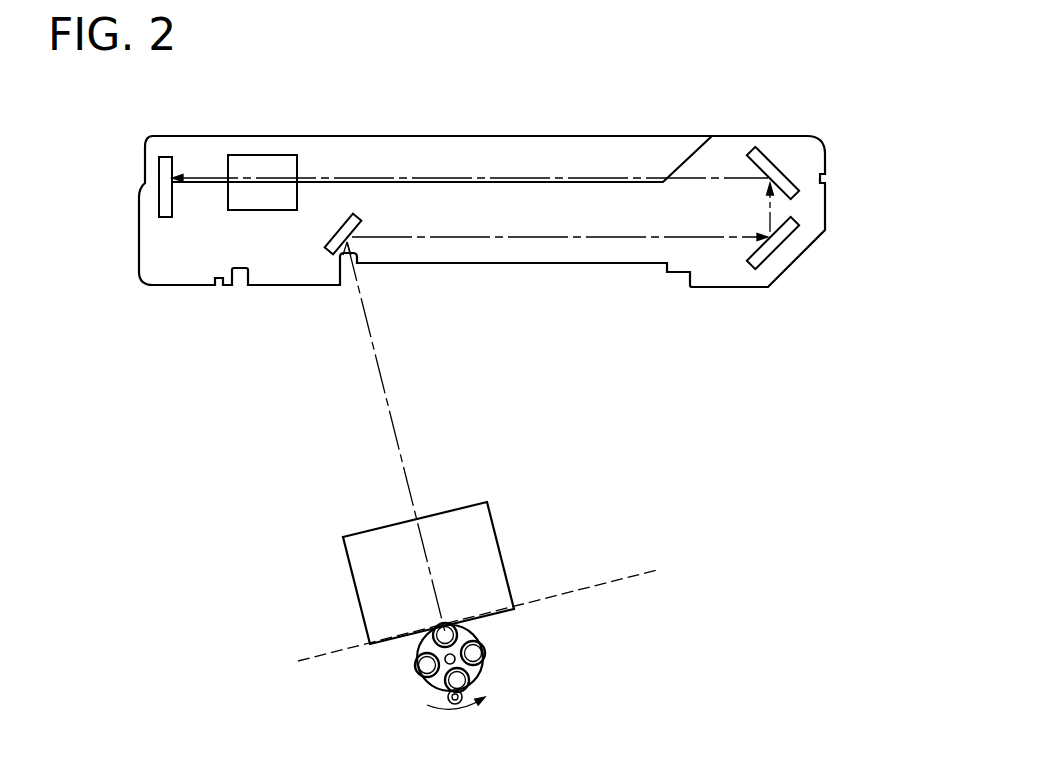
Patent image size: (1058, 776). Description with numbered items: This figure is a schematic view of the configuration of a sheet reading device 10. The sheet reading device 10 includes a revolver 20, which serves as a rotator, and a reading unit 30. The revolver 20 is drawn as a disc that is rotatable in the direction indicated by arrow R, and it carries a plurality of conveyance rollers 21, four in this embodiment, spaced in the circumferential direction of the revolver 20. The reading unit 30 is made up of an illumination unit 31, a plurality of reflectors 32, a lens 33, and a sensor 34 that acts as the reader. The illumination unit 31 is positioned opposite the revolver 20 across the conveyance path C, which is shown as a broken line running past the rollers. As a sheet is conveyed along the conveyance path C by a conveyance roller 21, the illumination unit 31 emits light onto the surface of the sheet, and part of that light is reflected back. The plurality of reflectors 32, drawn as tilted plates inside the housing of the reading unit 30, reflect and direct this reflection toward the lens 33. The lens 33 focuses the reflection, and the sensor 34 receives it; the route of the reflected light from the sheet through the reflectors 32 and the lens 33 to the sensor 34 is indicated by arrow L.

The sheet reading device 10 is at (687, 100).
The revolver 20 is at (497, 673).
The conveyance rollers 21 is at (475, 650).
The reading unit 30 is at (862, 318).
The illumination unit 31 is at (497, 523).
The reflectors 32 is at (780, 163).
The lens 33 is at (265, 155).
The sensor 34 is at (158, 205).
The arrow L is at (392, 408).
The conveyance path C is at (608, 585).
The arrow R is at (456, 718).